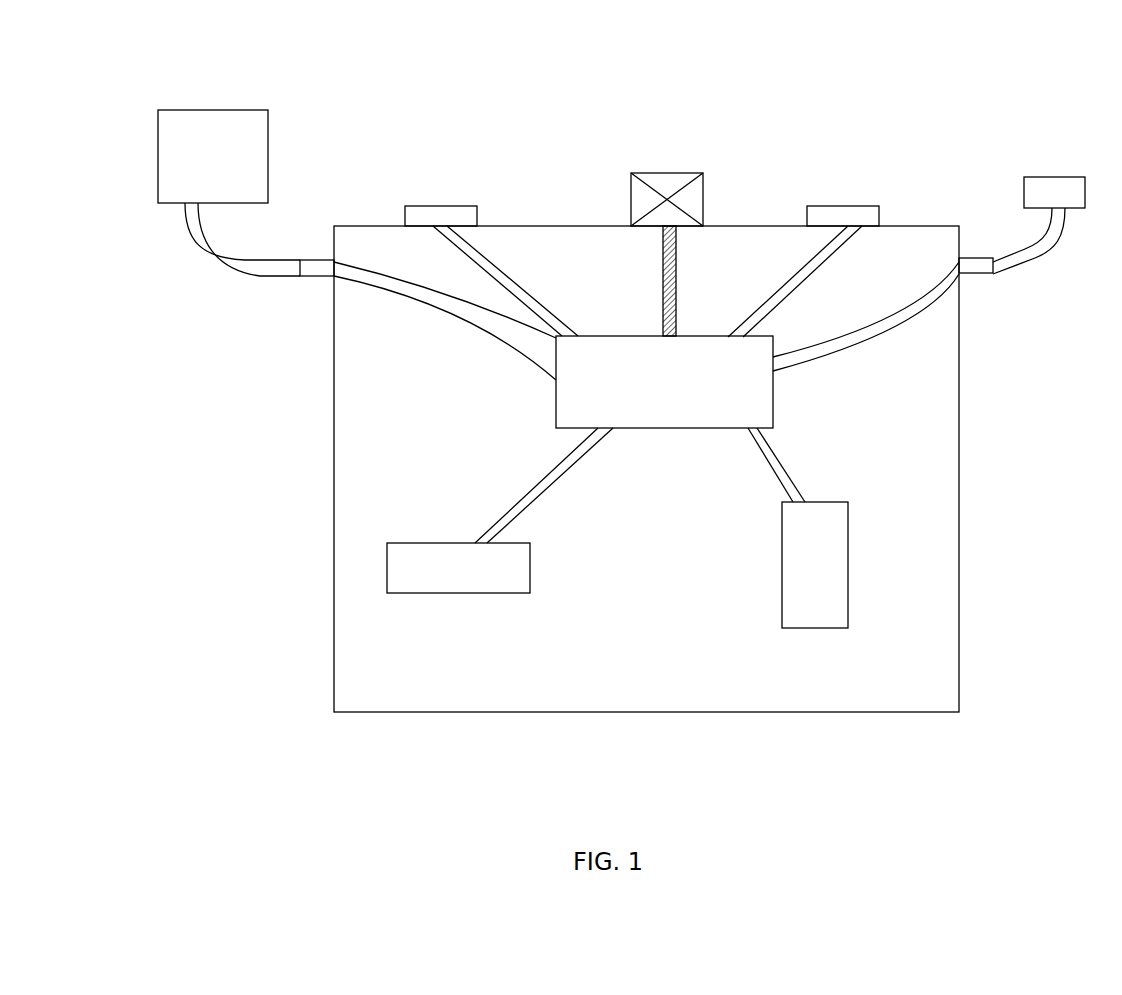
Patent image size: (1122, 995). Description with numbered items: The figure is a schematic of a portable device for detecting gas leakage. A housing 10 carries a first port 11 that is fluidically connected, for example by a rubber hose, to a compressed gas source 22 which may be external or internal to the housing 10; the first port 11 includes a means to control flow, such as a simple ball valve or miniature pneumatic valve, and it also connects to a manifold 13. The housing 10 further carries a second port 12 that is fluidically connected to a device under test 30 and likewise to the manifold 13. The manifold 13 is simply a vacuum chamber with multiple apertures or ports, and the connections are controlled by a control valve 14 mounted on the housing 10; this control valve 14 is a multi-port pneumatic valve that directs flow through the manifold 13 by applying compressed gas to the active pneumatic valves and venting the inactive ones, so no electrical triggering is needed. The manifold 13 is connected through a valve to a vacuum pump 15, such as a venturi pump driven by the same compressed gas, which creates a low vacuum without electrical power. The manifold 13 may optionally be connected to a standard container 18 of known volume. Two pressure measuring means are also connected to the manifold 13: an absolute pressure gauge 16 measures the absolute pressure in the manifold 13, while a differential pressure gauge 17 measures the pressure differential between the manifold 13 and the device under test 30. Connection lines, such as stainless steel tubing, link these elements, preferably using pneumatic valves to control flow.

The housing 10 is at (620, 785).
The first port 11 is at (919, 289).
The second port 12 is at (370, 291).
The manifold 13 is at (664, 382).
The control valve 14 is at (667, 213).
The vacuum pump 15 is at (500, 510).
The absolute pressure gauge 16 is at (483, 235).
The differential pressure gauge 17 is at (813, 239).
The standard container 18 is at (798, 528).
The compressed gas source 22 is at (1067, 158).
The device under test 30 is at (248, 67).